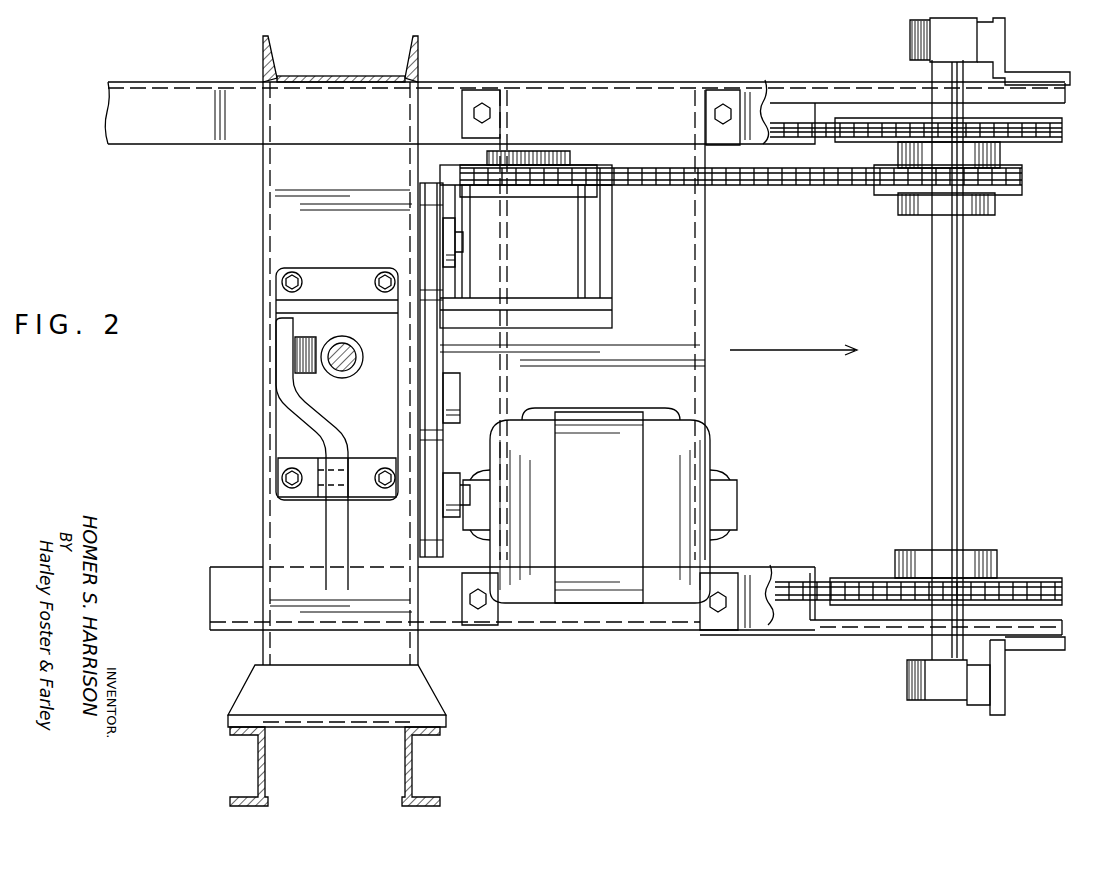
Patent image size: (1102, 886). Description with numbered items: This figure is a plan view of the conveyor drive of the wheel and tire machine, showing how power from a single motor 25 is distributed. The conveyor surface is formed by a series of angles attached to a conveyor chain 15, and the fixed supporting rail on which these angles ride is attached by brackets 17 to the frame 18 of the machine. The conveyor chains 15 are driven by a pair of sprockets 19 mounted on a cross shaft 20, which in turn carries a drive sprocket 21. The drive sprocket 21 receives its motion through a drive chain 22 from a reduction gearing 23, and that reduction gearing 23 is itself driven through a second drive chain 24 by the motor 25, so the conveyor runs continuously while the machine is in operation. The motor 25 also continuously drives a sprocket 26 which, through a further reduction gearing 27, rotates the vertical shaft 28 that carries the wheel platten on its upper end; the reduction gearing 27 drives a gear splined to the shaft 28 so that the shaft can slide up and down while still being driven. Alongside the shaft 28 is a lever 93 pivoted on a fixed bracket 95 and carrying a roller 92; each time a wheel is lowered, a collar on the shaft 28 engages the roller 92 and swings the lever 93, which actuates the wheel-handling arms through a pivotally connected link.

The conveyor chain 15 is at (824, 136).
The brackets 17 is at (820, 88).
The frame 18 is at (1032, 72).
The sprockets 19 is at (1042, 142).
The cross shaft 20 is at (964, 340).
The drive sprocket 21 is at (892, 196).
The drive chain 22 is at (822, 188).
The reduction gearing 23 is at (585, 290).
The drive chain 24 is at (437, 342).
The motor 25 is at (606, 418).
The sprocket 26 is at (446, 370).
The reduction gearing 27 is at (352, 270).
The vertical shaft 28 is at (342, 344).
The roller 92 is at (306, 372).
The lever 93 is at (338, 426).
The fixed bracket 95 is at (376, 462).